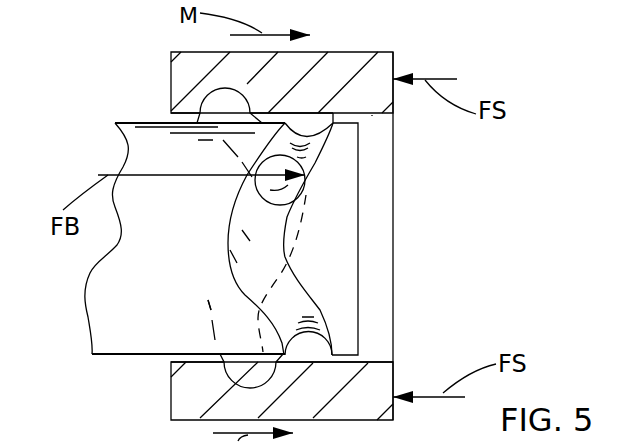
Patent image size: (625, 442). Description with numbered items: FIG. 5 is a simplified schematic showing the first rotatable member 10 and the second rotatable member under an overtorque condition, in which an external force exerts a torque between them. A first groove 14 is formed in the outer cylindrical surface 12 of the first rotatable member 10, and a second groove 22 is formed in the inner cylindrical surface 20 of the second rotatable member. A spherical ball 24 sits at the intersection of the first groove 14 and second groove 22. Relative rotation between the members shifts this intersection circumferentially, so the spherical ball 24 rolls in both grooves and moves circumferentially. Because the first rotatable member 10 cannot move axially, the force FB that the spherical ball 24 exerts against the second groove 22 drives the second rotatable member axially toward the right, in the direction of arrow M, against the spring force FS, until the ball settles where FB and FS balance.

The first rotatable member 10 is at (338, 237).
The outer cylindrical surface 12 is at (103, 353).
The first groove 14 is at (310, 160).
The inner cylindrical surface 20 is at (370, 116).
The second groove 22 is at (213, 297).
The spherical ball 24 is at (272, 193).